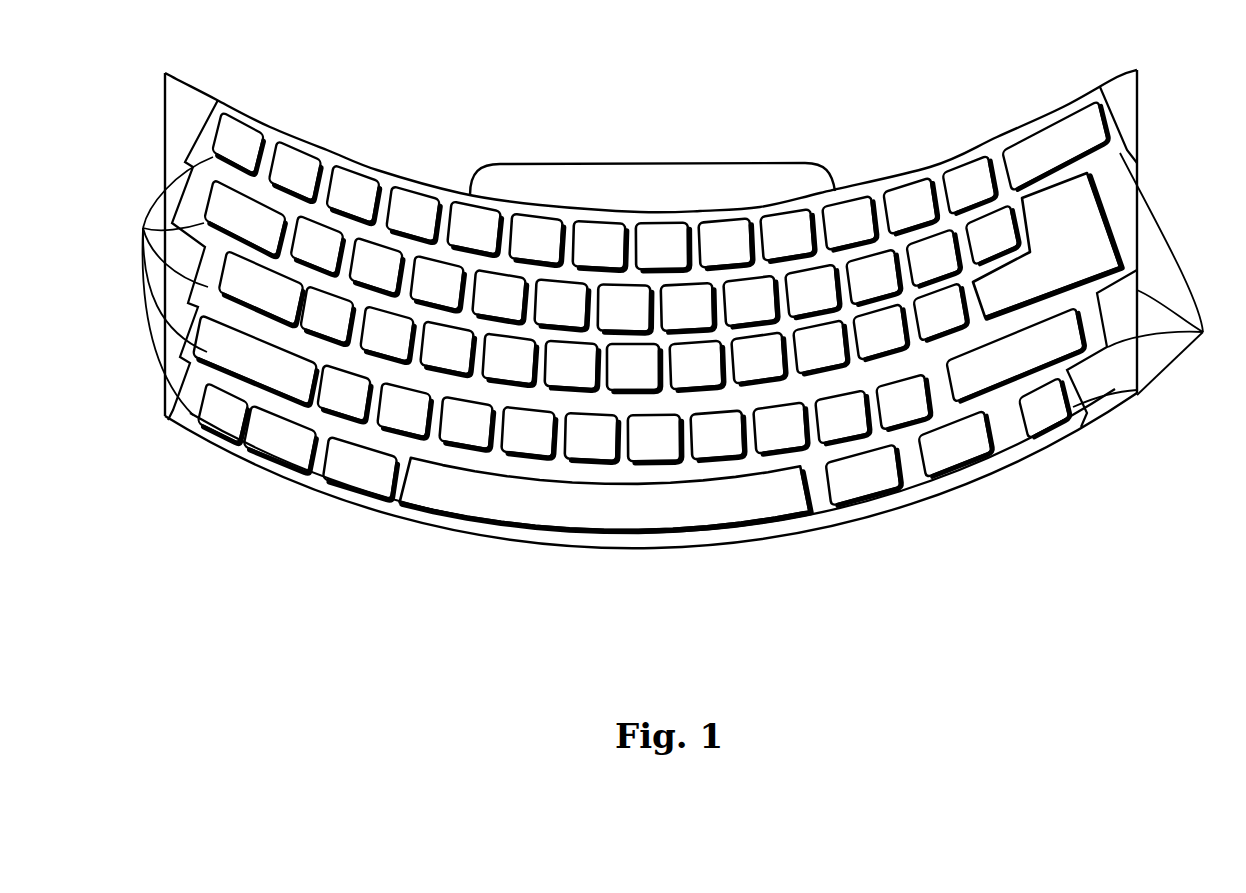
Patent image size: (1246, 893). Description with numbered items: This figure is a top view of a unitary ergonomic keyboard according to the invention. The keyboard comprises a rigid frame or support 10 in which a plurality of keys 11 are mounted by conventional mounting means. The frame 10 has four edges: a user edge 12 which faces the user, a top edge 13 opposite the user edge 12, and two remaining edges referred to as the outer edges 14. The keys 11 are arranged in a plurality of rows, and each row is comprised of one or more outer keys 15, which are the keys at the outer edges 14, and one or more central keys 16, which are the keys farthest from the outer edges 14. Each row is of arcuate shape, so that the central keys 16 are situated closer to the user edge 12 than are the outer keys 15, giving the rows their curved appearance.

The frame 10 is at (398, 515).
The keys 11 is at (790, 440).
The user edge 12 is at (652, 563).
The top edge 13 is at (375, 169).
The outer edges 14 is at (165, 108).
The outer keys 15 is at (143, 229).
The central keys 16 is at (649, 164).